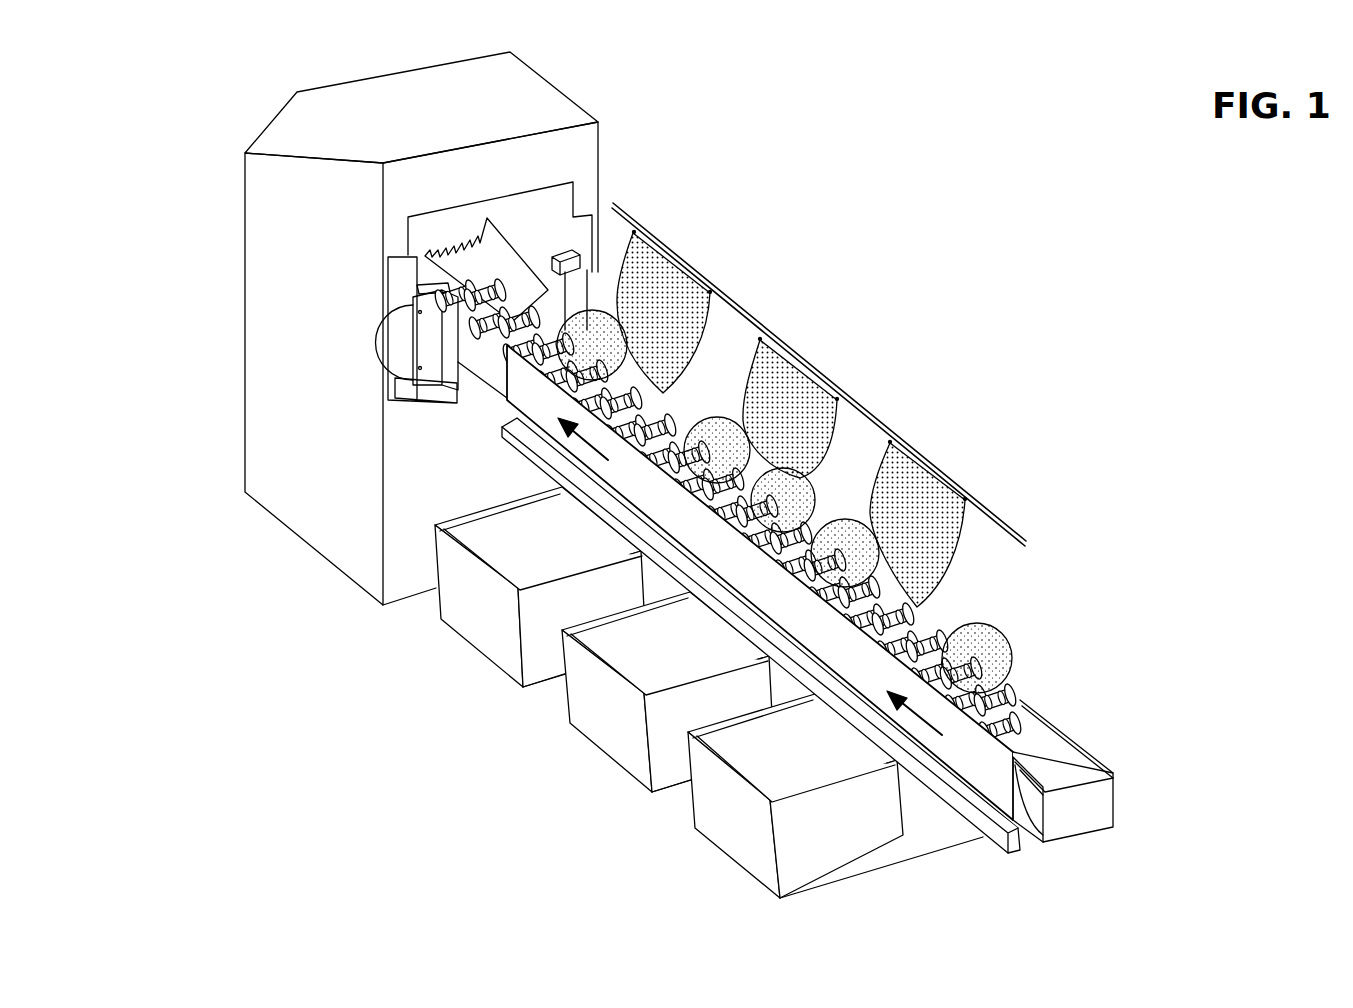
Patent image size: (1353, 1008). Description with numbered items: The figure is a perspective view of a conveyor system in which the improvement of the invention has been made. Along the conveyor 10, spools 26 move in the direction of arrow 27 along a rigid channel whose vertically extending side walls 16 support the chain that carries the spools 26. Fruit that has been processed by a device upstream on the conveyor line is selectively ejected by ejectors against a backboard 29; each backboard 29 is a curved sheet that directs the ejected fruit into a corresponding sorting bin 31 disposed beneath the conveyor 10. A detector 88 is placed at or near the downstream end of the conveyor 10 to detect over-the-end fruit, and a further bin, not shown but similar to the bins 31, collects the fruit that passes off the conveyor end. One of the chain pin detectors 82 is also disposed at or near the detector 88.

The conveyor 10 is at (858, 213).
The side walls 16 is at (1057, 840).
The spools 26 is at (1070, 738).
The arrow 27 is at (585, 445).
The backboard 29 is at (643, 377).
The sorting bin 31 is at (500, 668).
The chain pin detector 82 is at (405, 338).
The detector 88 is at (576, 248).